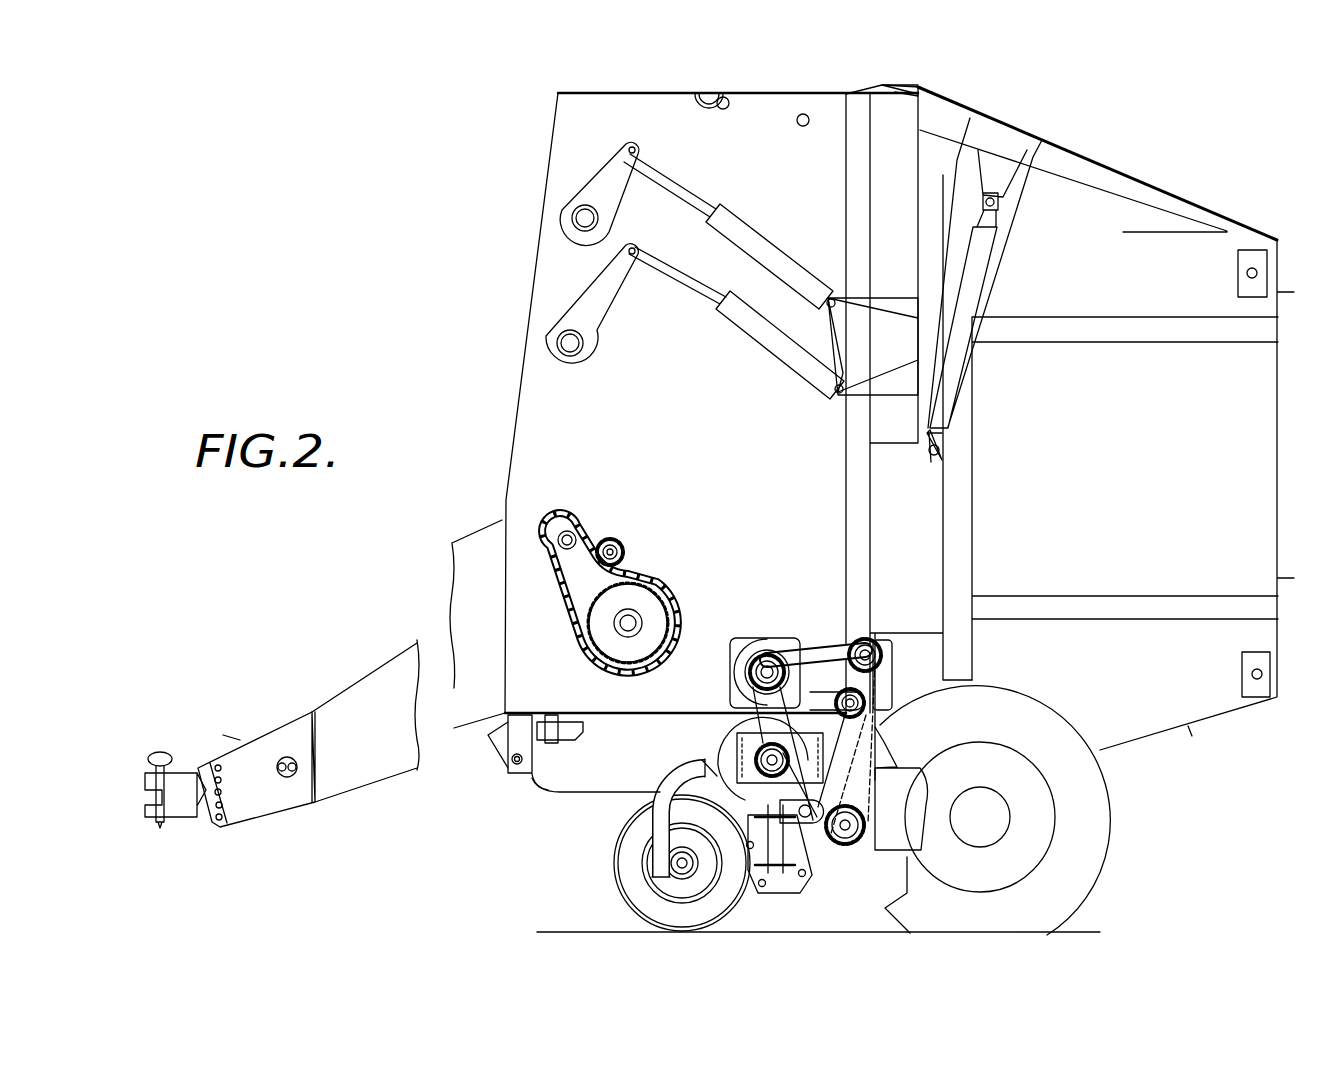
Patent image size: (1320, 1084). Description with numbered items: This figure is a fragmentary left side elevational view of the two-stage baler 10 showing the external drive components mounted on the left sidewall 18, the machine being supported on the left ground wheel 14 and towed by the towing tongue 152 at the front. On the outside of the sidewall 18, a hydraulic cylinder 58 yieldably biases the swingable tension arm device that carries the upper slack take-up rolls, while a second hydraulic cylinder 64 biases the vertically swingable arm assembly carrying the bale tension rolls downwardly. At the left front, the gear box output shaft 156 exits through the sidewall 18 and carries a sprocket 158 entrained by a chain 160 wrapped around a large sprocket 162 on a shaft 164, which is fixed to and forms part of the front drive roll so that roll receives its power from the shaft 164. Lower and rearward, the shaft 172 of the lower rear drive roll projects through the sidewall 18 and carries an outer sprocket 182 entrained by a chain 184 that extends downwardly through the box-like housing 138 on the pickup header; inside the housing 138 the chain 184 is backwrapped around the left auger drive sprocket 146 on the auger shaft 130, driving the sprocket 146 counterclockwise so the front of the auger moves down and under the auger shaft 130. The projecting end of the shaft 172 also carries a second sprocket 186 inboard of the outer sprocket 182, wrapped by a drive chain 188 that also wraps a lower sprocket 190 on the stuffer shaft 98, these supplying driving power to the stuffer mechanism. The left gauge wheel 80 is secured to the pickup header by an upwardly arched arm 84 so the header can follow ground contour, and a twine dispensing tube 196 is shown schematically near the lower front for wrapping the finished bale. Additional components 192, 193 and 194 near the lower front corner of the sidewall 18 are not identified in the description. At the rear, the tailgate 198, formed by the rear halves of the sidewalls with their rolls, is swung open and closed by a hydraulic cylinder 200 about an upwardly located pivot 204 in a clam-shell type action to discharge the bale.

The two-stage baler 10 is at (512, 278).
The left ground wheel 14 is at (1105, 818).
The left sidewall 18 is at (520, 458).
The hydraulic cylinder 58 is at (735, 230).
The hydraulic cylinder 64 is at (762, 345).
The left gauge wheel 80 is at (640, 900).
The upwardly arched arm 84 is at (647, 838).
The stuffer shaft 98 is at (852, 823).
The auger shaft 130 is at (740, 798).
The housing 138 is at (745, 745).
The drive sprocket 146 is at (765, 760).
The towing tongue 152 is at (360, 693).
The output shaft 156 is at (571, 533).
The sprocket 158 is at (570, 580).
The chain 160 is at (633, 568).
The large sprocket 162 is at (602, 640).
The shaft 164 is at (632, 621).
The shaft 172 is at (753, 654).
The outer sprocket 182 is at (817, 645).
The chain 184 is at (760, 680).
The second sprocket 186 is at (730, 692).
The drive chain 188 is at (835, 643).
The lower sprocket 190 is at (846, 846).
The linkage 192 is at (542, 790).
The rod 193 is at (597, 797).
The bracket 194 is at (522, 770).
The twine dispensing tube 196 is at (570, 733).
The tailgate 198 is at (1256, 232).
The hydraulic cylinder 200 is at (966, 305).
The pivot 204 is at (948, 95).